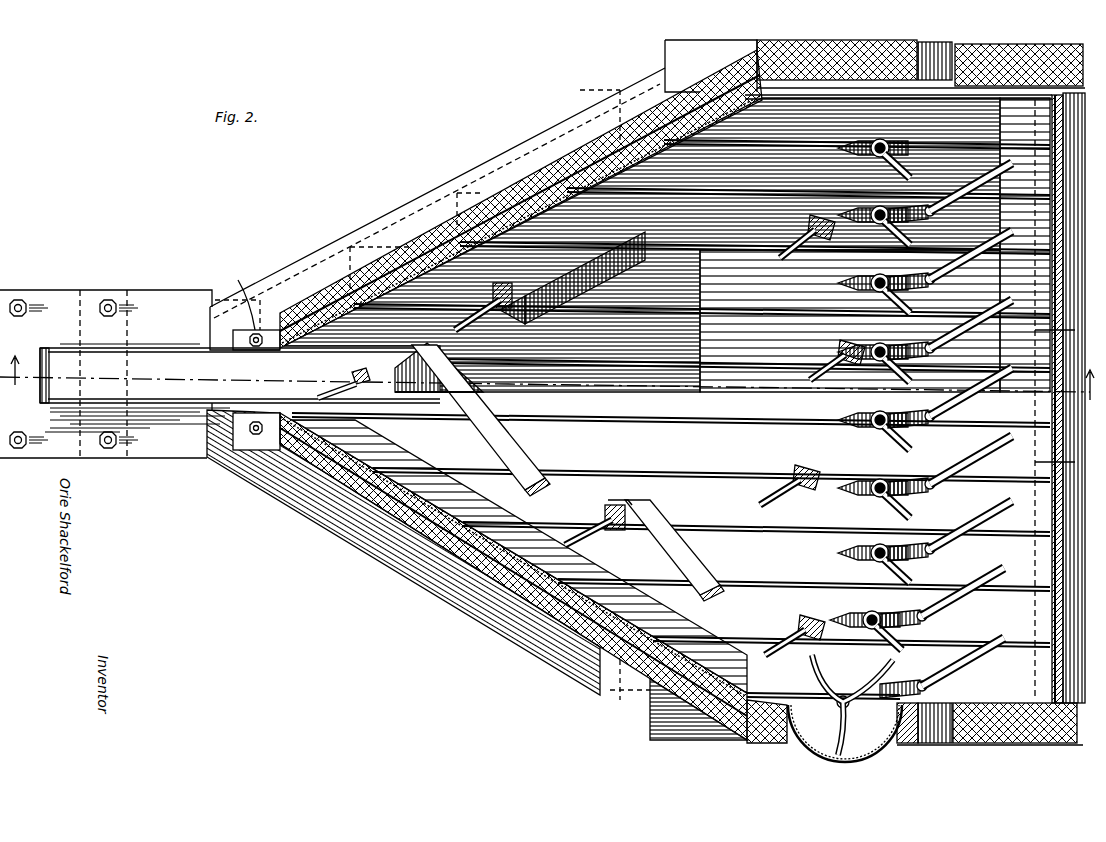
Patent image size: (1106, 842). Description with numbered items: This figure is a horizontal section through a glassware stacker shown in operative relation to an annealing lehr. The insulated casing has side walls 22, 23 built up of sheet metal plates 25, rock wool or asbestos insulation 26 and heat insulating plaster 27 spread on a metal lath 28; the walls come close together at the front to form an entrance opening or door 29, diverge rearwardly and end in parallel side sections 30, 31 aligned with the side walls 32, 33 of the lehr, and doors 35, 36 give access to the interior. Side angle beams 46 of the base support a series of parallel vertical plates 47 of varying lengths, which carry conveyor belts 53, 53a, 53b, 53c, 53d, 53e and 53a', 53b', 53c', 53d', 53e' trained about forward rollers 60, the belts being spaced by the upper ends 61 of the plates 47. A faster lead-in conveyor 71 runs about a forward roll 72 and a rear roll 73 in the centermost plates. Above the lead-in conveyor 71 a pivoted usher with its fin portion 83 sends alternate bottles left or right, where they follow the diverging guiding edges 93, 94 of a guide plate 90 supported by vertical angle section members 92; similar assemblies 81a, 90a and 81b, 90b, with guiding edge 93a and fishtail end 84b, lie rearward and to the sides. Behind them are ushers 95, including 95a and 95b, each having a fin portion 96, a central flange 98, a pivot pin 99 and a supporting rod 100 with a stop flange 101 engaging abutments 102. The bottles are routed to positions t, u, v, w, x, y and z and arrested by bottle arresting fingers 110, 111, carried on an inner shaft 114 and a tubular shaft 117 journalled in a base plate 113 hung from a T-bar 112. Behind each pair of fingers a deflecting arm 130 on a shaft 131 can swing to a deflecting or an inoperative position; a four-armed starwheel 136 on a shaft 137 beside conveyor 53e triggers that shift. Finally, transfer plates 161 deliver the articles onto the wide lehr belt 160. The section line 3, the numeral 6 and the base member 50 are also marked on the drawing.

The section line 3 is at (551, 391).
The slat 6 is at (880, 181).
The side wall 22 is at (388, 560).
The side wall 23 is at (420, 245).
The sheet metal plates 25 is at (345, 300).
The rock wool or asbestos insulation 26 is at (325, 300).
The heat insulating plaster 27 is at (385, 285).
The metal lath 28 is at (434, 210).
The entrance opening or door 29 is at (241, 291).
The parallel side section 30 is at (932, 745).
The parallel side section 31 is at (940, 45).
The side wall of the lehr 32 is at (1003, 745).
The side wall of the lehr 33 is at (1010, 50).
The door 35 is at (546, 160).
The door 36 is at (850, 50).
The side angle beams 46 is at (697, 56).
The parallel vertical plates 47 is at (140, 348).
The lower frame bar 50 is at (190, 452).
The conveyor belt 53 is at (545, 381).
The conveyor belt 53a is at (745, 348).
The conveyor belt 53b is at (702, 296).
The conveyor belt 53c is at (755, 234).
The conveyor belt 53d is at (808, 182).
The conveyor belt 53e is at (667, 245).
The conveyor belt 53a' is at (671, 432).
The conveyor belt 53b' is at (711, 485).
The conveyor belt 53c' is at (756, 544).
The conveyor belt 53d' is at (804, 595).
The conveyor belt 53e' is at (851, 668).
The rollers 60 is at (278, 290).
The upper ends of the plates 61 is at (350, 376).
The lead-in conveyor 71 is at (158, 368).
The forward roll 72 is at (56, 350).
The rear roll 73 is at (400, 405).
The usher 81a is at (483, 296).
The usher 81b is at (595, 516).
The fin portion 83 is at (318, 398).
The fishtail end 84b is at (625, 508).
The guide plate 90 is at (478, 417).
The guide plate 90a is at (580, 268).
The guide plate 90b is at (680, 520).
The vertical angle section members 92 is at (520, 490).
The guiding edge 93 is at (410, 342).
The guiding edge 93a is at (540, 290).
The guiding edge 94 is at (440, 415).
The ushers or deflectors 95 is at (840, 350).
The usher 95a is at (812, 215).
The usher 95b is at (800, 470).
The fin portion 96 is at (790, 356).
The central flange 98 is at (810, 355).
The pivot pin 99 is at (805, 365).
The vertical supporting rod 100 is at (845, 366).
The stop flange 101 is at (848, 345).
The abutments 102 is at (838, 342).
The bottle arresting finger 110 is at (905, 150).
The bottle arresting finger 111 is at (920, 205).
The T-bar 112 is at (860, 283).
The guide or base plate 113 is at (965, 200).
The vertical shaft 114 is at (880, 146).
The tubular shaft 117 is at (862, 346).
The deflecting arm 130 is at (1002, 185).
The shaft 131 is at (1030, 270).
The starwheel 136 is at (840, 750).
The starwheel shaft 137 is at (800, 742).
The lehr belt 160 is at (1075, 136).
The transfer plates 161 is at (1038, 331).
The position w is at (874, 246).
The position u is at (872, 323).
The position y is at (867, 386).
The position t is at (865, 454).
The position x is at (867, 519).
The position v is at (867, 589).
The position z is at (865, 654).